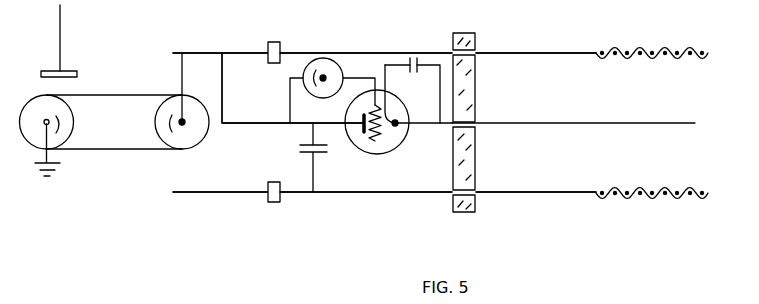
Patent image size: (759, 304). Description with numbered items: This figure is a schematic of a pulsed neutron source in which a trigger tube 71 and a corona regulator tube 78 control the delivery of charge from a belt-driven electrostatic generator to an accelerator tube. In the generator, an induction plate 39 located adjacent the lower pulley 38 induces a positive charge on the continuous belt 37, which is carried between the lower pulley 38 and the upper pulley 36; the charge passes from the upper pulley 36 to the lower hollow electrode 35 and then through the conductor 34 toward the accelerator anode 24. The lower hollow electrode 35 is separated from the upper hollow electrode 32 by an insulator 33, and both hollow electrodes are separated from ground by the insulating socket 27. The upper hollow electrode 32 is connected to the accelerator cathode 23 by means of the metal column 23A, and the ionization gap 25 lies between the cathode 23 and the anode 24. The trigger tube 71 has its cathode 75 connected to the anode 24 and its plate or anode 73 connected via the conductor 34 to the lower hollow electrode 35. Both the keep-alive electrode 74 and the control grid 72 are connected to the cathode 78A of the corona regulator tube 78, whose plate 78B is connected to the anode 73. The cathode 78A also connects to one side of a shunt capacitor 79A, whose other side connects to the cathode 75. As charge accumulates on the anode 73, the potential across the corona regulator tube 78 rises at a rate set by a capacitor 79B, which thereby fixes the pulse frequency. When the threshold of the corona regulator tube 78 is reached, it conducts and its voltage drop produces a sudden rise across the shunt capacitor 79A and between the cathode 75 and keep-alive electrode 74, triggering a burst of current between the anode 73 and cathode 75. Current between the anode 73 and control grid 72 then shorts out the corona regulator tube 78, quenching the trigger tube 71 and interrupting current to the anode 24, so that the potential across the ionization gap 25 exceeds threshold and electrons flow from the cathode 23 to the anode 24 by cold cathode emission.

The cathode 23 is at (698, 53).
The column 23A is at (590, 53).
The anode 24 is at (652, 123).
The ionization gap 25 is at (649, 163).
The insulating socket 27 is at (476, 42).
The upper hollow electrode 32 is at (396, 52).
The insulator 33 is at (278, 42).
The conductor 34 is at (250, 123).
The lower hollow electrode 35 is at (232, 52).
The upper pulley 36 is at (155, 128).
The belt 37 is at (148, 93).
The lower pulley 38 is at (74, 114).
The induction plate 39 is at (68, 70).
The trigger tube 71 is at (393, 146).
The control grid 72 is at (375, 88).
The anode 73 is at (322, 124).
The keep-alive electrode 74 is at (406, 95).
The cathode 75 is at (415, 125).
The corona regulator tube 78 is at (305, 70).
The cathode 78A is at (352, 63).
The plate 78B is at (290, 93).
The shunt capacitor 79A is at (403, 68).
The capacitor 79B is at (302, 157).